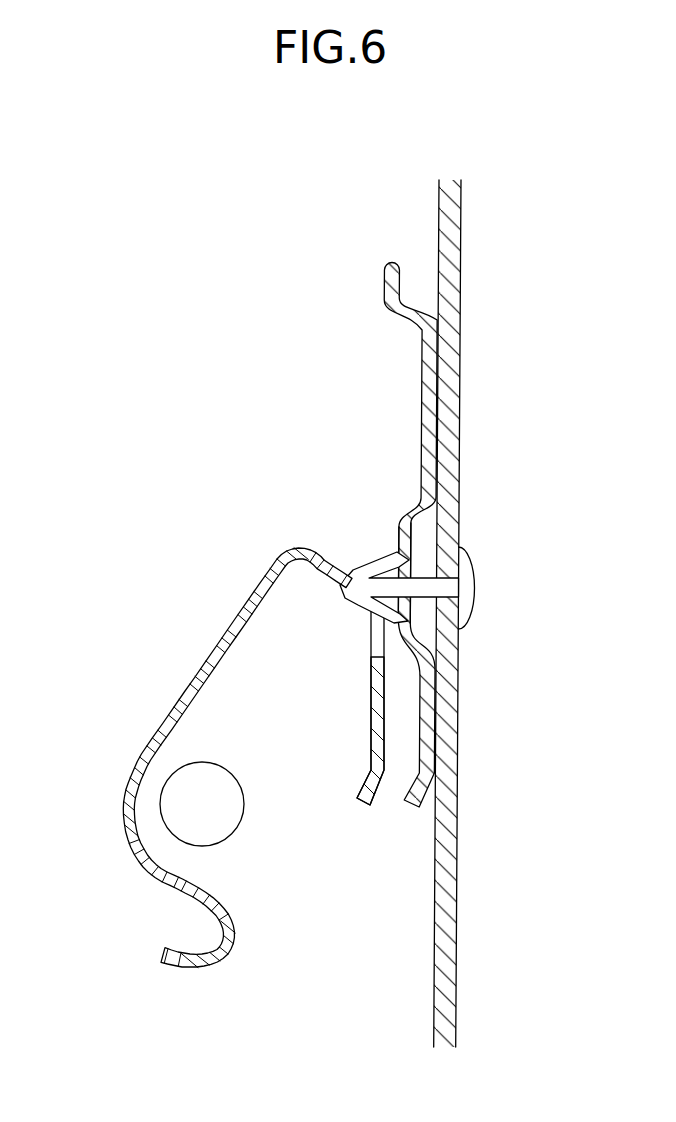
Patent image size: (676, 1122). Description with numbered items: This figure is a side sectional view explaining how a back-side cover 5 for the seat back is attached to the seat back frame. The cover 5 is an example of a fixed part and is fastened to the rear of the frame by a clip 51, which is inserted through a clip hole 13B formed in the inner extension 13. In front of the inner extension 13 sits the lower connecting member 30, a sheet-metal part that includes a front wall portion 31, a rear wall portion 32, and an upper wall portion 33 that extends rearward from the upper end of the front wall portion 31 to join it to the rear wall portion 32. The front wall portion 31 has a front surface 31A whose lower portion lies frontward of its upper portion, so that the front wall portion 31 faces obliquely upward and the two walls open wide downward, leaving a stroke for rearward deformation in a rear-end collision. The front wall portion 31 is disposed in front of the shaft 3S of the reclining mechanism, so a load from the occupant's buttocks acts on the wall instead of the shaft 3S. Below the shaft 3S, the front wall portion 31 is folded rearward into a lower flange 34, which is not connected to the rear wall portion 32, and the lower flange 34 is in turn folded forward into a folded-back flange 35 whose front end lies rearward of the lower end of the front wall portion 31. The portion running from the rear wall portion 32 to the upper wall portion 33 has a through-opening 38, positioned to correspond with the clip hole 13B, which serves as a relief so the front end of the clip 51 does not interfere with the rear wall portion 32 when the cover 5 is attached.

The cover 5 is at (452, 293).
The inner extension 13 is at (473, 535).
The clip hole 13B is at (413, 568).
The clip 51 is at (471, 586).
The lower connecting member 30 is at (204, 757).
The front wall portion 31 is at (199, 673).
The front surface 31A is at (153, 736).
The rear wall portion 32 is at (373, 713).
The upper wall portion 33 is at (319, 548).
The lower flange 34 is at (177, 882).
The folded-back flange 35 is at (178, 960).
The through-opening 38 is at (333, 572).
The shaft 3S is at (227, 823).